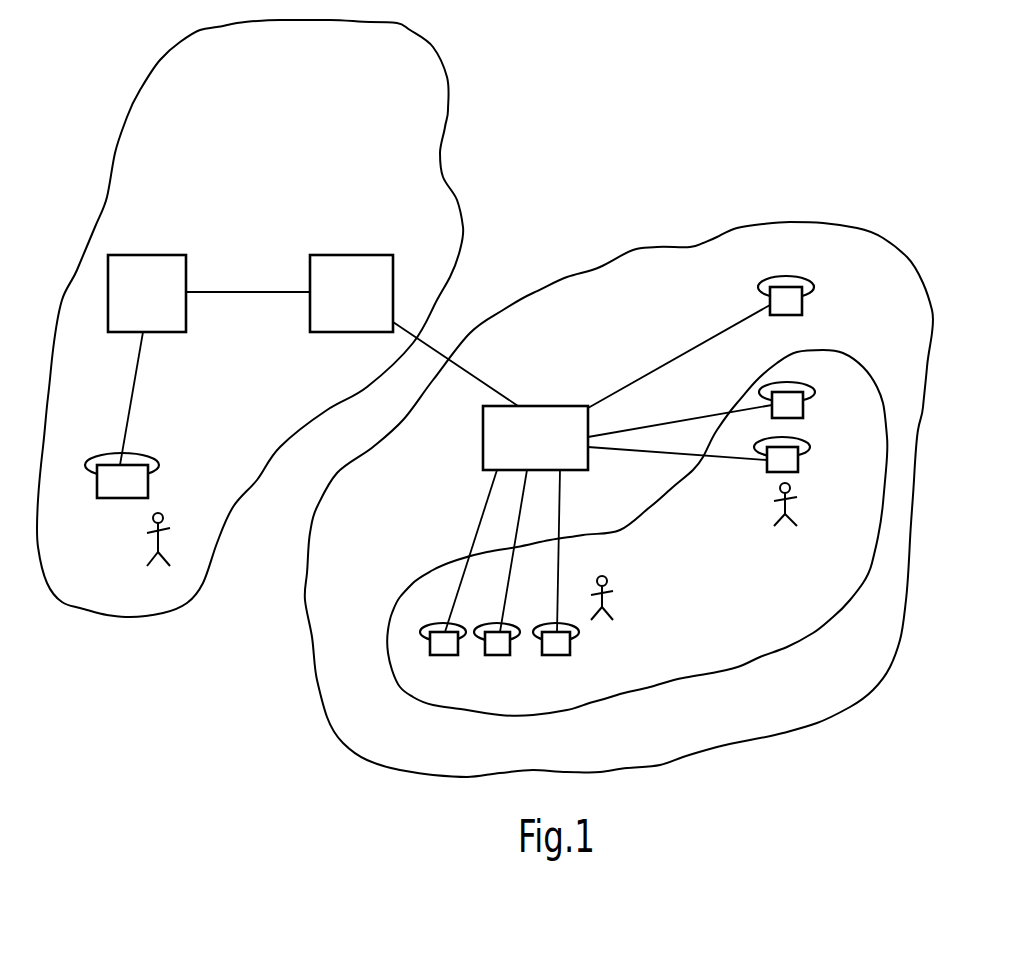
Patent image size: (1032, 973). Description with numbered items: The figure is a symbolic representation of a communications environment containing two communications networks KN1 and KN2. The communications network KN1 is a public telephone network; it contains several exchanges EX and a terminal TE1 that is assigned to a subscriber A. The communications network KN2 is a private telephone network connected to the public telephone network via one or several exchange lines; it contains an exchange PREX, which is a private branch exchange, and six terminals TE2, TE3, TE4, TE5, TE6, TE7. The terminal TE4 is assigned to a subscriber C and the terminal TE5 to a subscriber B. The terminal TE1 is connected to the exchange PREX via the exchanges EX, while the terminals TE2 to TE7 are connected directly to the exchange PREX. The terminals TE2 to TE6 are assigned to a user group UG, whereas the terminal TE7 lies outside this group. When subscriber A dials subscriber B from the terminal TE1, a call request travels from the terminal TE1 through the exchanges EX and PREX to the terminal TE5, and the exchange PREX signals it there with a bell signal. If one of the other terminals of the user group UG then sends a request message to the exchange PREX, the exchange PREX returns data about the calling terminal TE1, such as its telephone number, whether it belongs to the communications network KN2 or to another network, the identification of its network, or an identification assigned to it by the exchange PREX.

The communications network KN1 is at (446, 122).
The communications network KN2 is at (781, 222).
The exchange EX is at (313, 337).
The exchange PREX is at (608, 468).
The terminal TE1 is at (153, 476).
The terminal TE2 is at (441, 659).
The terminal TE3 is at (498, 659).
The terminal TE4 is at (559, 659).
The terminal TE5 is at (810, 452).
The terminal TE6 is at (813, 405).
The terminal TE7 is at (818, 298).
The user group UG is at (743, 665).
The subscriber A is at (147, 539).
The subscriber B is at (800, 504).
The subscriber C is at (612, 602).